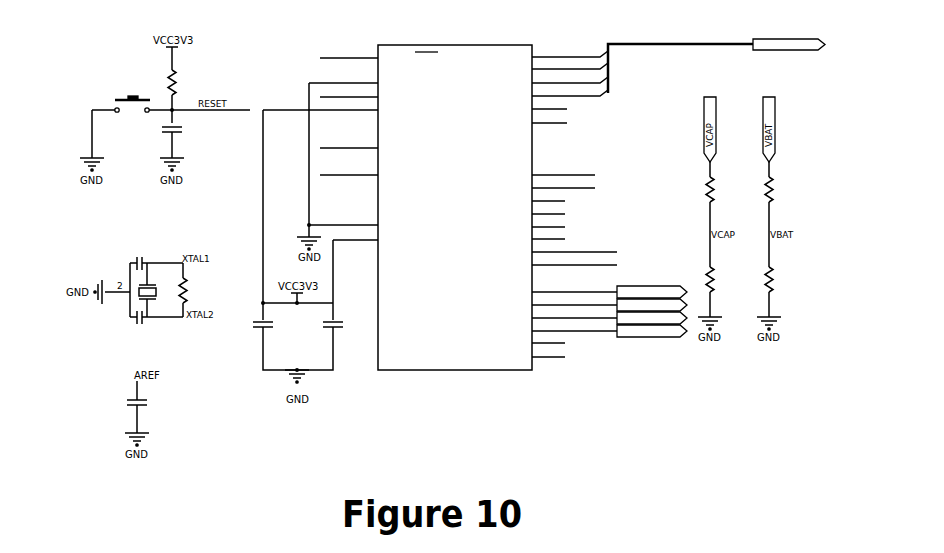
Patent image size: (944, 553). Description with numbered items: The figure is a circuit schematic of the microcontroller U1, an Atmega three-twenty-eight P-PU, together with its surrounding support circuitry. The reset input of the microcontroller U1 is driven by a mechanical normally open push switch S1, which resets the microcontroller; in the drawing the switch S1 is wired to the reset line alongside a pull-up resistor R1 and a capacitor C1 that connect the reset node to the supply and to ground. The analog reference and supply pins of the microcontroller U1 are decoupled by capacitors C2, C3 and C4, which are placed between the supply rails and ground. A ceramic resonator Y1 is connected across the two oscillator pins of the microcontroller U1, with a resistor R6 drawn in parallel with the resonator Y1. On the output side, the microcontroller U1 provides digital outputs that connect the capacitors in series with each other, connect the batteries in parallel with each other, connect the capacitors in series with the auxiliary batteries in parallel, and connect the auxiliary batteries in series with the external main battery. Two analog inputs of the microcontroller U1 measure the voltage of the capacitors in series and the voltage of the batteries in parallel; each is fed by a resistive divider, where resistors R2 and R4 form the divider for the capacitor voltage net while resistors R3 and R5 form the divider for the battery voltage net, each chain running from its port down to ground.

The ATMEGA328P-PU microcontroller U1 is at (544, 208).
The reset pull-up resistor 10K R1 is at (191, 87).
The reset capacitor 22uF C1 is at (195, 140).
The reset push-button switch S1 is at (131, 105).
The decoupling capacitor 100nF C2 is at (289, 334).
The decoupling capacitor 100nF C3 is at (359, 334).
The AREF capacitor 100nF C4 is at (163, 414).
The ceramic resonator Y1 is at (168, 290).
The resonator feedback resistor 1M R6 is at (197, 290).
The VCAP divider resistor 3M9 R2 is at (727, 193).
The VBAT divider resistor 3M9 R3 is at (786, 193).
The VCAP divider resistor 1M1 R4 is at (727, 283).
The VBAT divider resistor 1M1 R5 is at (786, 283).